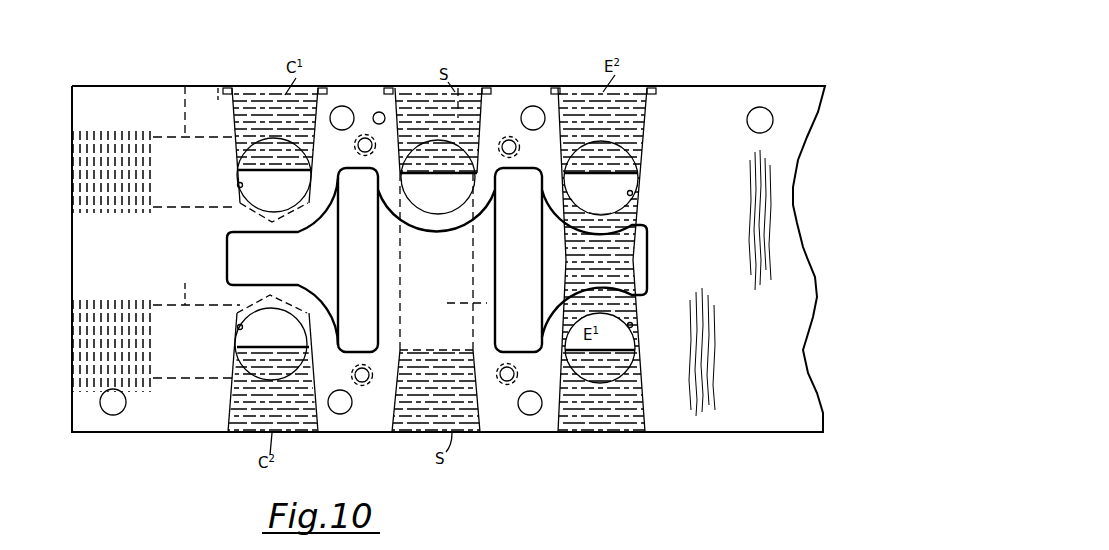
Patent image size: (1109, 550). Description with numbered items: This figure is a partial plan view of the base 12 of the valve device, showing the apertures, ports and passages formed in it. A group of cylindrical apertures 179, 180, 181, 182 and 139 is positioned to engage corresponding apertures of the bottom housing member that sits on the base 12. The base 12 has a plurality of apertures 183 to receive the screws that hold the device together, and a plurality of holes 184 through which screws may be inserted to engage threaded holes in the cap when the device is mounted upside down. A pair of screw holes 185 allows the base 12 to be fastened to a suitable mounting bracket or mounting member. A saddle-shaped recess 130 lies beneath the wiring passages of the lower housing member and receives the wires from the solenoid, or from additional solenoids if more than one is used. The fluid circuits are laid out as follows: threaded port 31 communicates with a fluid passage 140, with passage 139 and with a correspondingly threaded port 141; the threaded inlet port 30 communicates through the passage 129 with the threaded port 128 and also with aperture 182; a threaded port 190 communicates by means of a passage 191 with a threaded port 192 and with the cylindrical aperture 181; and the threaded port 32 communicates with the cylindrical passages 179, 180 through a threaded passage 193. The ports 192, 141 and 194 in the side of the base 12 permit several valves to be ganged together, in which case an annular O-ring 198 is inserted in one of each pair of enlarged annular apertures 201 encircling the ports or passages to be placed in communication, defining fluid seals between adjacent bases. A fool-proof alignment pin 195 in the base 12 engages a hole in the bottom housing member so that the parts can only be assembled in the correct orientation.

The base 12 is at (770, 434).
The threaded inlet port 30 is at (236, 433).
The threaded port 31 is at (458, 434).
The threaded port 32 is at (620, 434).
The threaded port 128 is at (77, 388).
The fluid passage 129 is at (185, 300).
The recess 130 is at (229, 258).
The passage 139 is at (424, 212).
The fluid passage 140 is at (489, 303).
The threaded port 141 is at (460, 88).
The cylindrical aperture 179 is at (633, 193).
The cylindrical aperture 180 is at (633, 325).
The cylindrical aperture 181 is at (238, 185).
The cylindrical aperture 182 is at (238, 328).
The apertures 183 is at (366, 138).
The holes 184 is at (343, 106).
The screw holes 185 is at (771, 108).
The threaded port 190 is at (95, 160).
The passage 191 is at (186, 82).
The threaded port 192 is at (258, 88).
The threaded passage 193 is at (633, 272).
The port 194 is at (624, 112).
The alignment pin 195 is at (381, 112).
The O-ring 198 is at (247, 86).
The annular apertures 201 is at (219, 86).